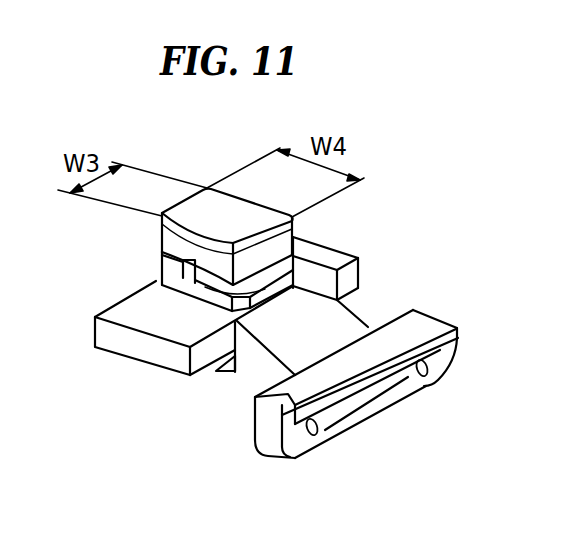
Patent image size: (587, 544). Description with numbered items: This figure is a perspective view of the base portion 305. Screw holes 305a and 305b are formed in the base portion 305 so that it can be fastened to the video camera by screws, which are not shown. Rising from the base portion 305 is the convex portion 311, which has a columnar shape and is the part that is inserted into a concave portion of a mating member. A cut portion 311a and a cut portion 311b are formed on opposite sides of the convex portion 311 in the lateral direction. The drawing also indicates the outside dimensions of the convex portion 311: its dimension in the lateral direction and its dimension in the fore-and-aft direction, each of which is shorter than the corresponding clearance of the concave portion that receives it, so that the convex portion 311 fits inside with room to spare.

The convex portion 311 is at (208, 202).
The cut portion 311a is at (172, 266).
The cut portion 311b is at (358, 238).
The base portion 305 is at (141, 362).
The screw hole 305a is at (319, 433).
The screw hole 305b is at (428, 373).